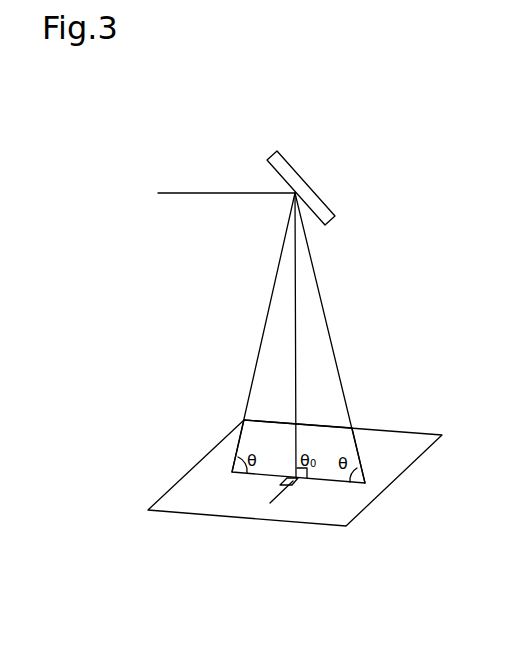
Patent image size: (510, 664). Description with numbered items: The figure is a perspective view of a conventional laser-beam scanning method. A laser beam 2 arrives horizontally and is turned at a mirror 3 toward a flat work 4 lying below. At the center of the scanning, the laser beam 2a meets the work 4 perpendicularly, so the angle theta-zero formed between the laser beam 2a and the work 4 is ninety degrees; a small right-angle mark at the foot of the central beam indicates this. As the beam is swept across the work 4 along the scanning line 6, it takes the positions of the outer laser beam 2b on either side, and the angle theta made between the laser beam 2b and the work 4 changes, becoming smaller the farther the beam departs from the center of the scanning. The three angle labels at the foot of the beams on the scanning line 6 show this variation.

The laser beam 2 is at (172, 192).
The mirror 3 is at (295, 165).
The laser beam 2b is at (282, 338).
The laser beam at the center of the scanning 2a is at (298, 402).
The work 4 is at (292, 513).
The scanning line 6 is at (333, 483).